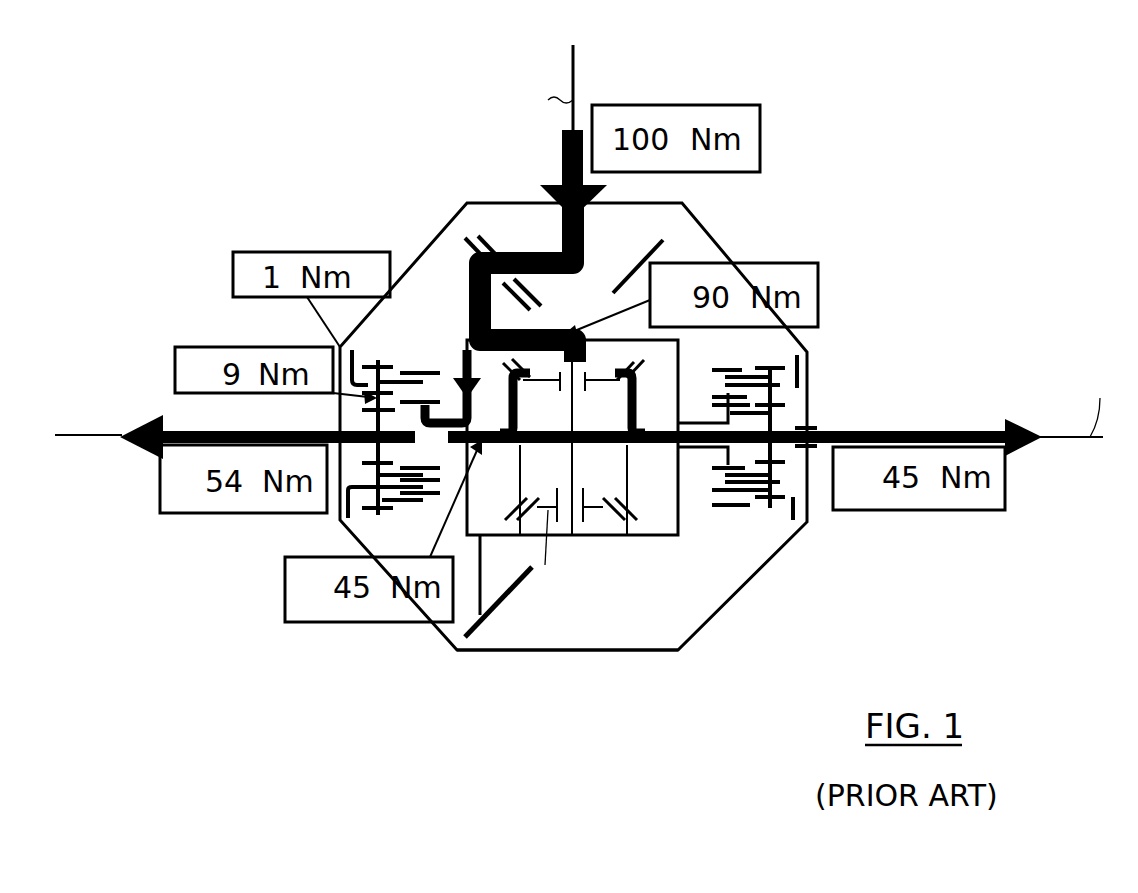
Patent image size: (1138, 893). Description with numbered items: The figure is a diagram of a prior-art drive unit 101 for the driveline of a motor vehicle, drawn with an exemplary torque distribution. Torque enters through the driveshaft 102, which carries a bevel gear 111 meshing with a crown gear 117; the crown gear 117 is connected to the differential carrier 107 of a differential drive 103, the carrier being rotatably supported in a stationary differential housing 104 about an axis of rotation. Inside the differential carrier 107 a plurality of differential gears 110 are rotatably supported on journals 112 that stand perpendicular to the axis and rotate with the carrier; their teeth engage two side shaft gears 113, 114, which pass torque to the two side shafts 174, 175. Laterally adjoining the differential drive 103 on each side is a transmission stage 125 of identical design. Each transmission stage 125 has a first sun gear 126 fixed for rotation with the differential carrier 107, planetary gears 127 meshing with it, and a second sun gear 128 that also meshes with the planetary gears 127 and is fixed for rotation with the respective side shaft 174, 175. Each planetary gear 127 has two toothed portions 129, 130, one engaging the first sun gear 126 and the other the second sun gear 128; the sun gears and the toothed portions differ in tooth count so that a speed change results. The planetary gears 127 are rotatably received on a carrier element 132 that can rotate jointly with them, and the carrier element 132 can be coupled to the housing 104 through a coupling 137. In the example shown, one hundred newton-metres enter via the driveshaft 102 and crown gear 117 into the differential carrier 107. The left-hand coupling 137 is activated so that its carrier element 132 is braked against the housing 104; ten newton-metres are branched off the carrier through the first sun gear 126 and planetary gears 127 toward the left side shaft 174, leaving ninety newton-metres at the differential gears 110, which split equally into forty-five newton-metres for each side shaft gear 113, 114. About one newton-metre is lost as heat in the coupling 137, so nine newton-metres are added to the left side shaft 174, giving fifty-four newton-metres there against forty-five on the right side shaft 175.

The drive unit 101 is at (402, 122).
The driveshaft 102 is at (573, 65).
The differential drive 103 is at (578, 585).
The differential housing 104 is at (480, 203).
The differential carrier 107 is at (613, 537).
The differential gears 110 is at (547, 552).
The bevel gear 111 is at (665, 240).
The journals 112 is at (574, 420).
The side shaft gear 113 is at (625, 490).
The side shaft gear 114 is at (520, 468).
The crown gear 117 is at (497, 613).
The transmission stage 125 is at (407, 338).
The first sun gear 126 is at (712, 465).
The planetary gears 127 is at (392, 510).
The second sun gear 128 is at (360, 452).
The toothed portion 129 is at (418, 370).
The toothed portion 130 is at (370, 367).
The carrier element 132 is at (350, 403).
The coupling 137 is at (330, 349).
The side shaft 174 is at (68, 434).
The side shaft 175 is at (1066, 441).